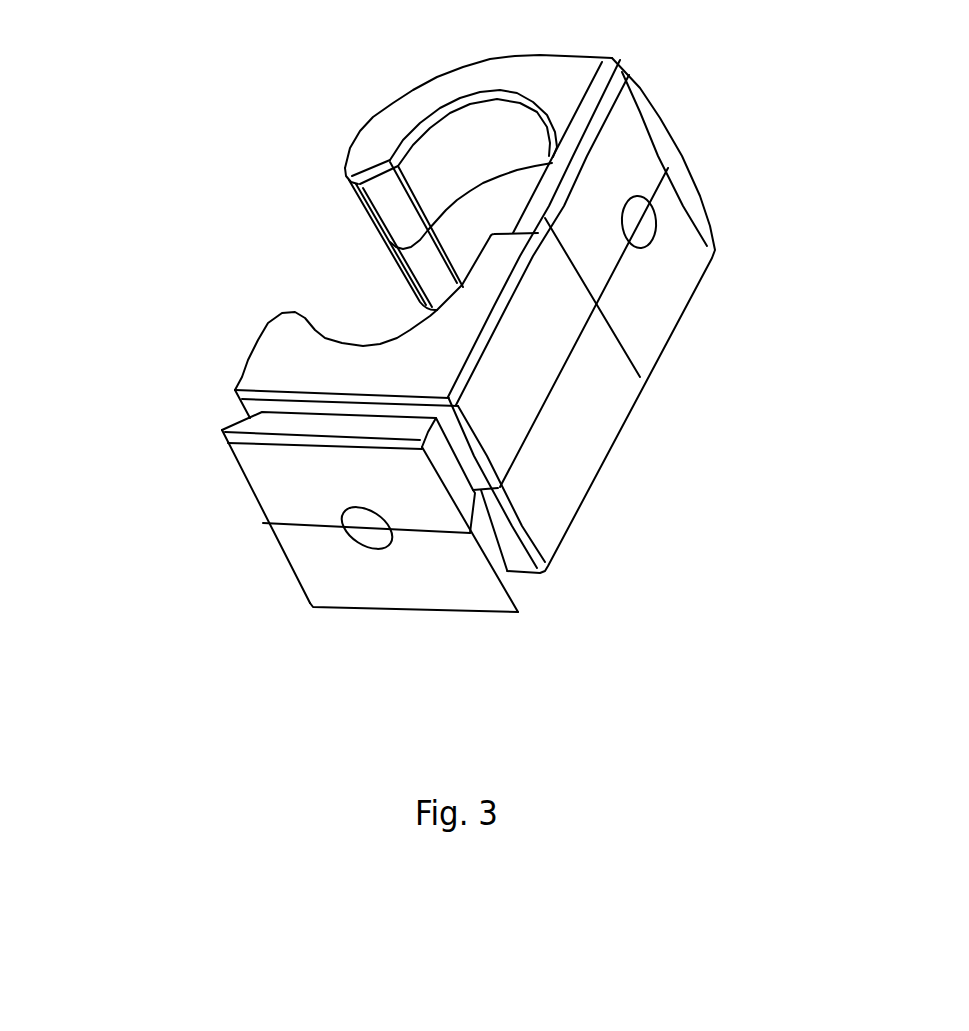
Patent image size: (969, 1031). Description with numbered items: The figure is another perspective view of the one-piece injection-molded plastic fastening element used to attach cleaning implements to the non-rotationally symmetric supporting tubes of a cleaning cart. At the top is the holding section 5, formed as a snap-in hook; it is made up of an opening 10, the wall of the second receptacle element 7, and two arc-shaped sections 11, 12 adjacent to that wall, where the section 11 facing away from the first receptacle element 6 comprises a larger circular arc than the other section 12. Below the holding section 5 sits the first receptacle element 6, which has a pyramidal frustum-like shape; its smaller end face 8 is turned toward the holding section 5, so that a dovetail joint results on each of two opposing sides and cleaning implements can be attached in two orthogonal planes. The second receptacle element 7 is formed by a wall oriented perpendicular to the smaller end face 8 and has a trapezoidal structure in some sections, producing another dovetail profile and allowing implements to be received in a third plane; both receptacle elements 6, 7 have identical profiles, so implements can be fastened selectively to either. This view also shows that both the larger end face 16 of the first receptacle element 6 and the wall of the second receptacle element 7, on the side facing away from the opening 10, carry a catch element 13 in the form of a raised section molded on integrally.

The holding section 5 is at (278, 255).
The opening 10 is at (298, 188).
The arc-shaped section 11 is at (388, 122).
The arc-shaped section 12 is at (300, 333).
The second receptacle element 7 is at (634, 287).
The first receptacle element 6 is at (277, 490).
The smaller end face 8 is at (503, 532).
The catch element 13 is at (647, 222).
The larger end face 16 is at (357, 578).